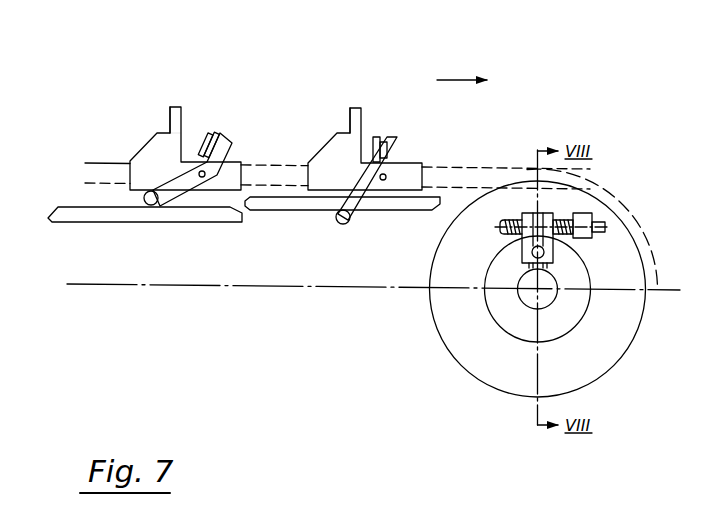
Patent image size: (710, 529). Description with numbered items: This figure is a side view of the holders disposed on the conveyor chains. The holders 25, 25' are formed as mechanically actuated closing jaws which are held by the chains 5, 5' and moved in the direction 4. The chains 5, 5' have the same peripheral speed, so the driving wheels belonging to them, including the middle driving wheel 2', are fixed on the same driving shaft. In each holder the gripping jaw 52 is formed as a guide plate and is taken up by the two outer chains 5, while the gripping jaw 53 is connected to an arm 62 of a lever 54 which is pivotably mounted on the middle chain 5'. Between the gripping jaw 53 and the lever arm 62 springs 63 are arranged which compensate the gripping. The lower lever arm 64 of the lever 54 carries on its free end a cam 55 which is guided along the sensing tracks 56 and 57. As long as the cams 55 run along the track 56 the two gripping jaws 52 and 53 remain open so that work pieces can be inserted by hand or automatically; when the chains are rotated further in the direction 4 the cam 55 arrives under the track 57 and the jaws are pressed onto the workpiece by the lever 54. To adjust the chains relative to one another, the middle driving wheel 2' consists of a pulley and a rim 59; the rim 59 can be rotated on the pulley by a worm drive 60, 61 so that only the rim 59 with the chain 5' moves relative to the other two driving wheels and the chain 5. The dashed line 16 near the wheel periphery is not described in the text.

The driving wheel 2' is at (555, 289).
The direction 4 is at (462, 71).
The chain 5 is at (336, 148).
The chain 5' is at (337, 153).
The wheel periphery path 16 is at (495, 180).
The holder 25 is at (185, 100).
The holder 25' is at (365, 115).
The gripping jaw 52 is at (170, 110).
The gripping jaw 53 is at (213, 137).
The lever 54 is at (212, 188).
The cam 55 is at (146, 206).
The sensing track 56 is at (92, 215).
The sensing track 57 is at (390, 206).
The rim 59 is at (450, 322).
The worm drive 60 is at (600, 223).
The worm drive 61 is at (553, 220).
The lever arm 62 is at (231, 138).
The spring 63 is at (382, 137).
The lower lever arm 64 is at (183, 187).